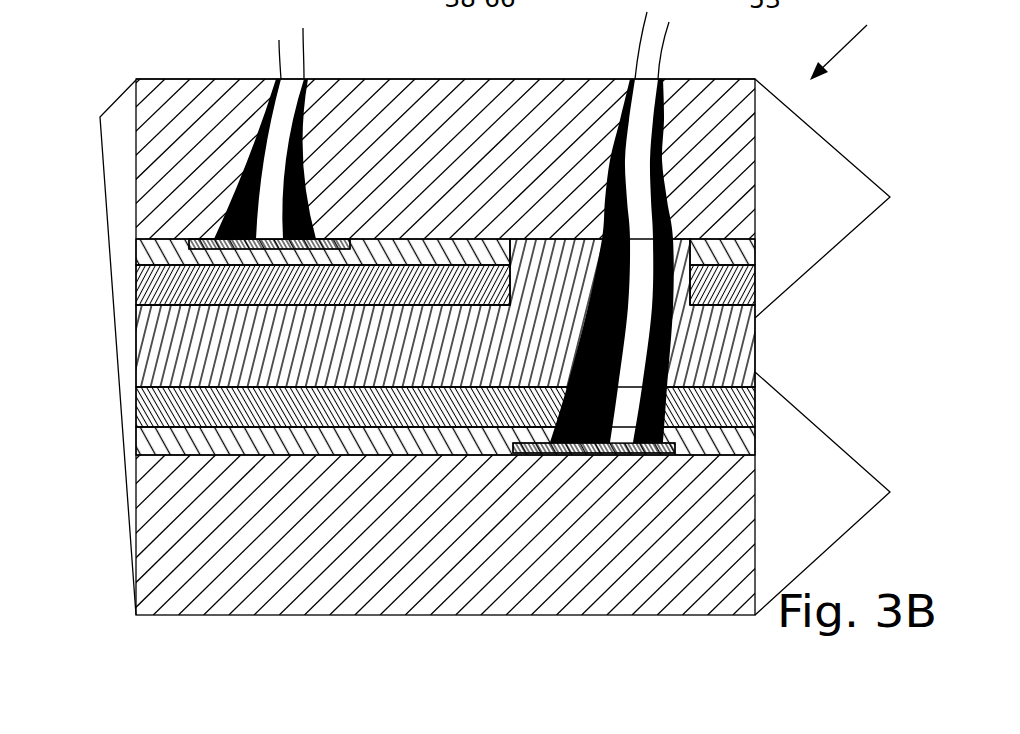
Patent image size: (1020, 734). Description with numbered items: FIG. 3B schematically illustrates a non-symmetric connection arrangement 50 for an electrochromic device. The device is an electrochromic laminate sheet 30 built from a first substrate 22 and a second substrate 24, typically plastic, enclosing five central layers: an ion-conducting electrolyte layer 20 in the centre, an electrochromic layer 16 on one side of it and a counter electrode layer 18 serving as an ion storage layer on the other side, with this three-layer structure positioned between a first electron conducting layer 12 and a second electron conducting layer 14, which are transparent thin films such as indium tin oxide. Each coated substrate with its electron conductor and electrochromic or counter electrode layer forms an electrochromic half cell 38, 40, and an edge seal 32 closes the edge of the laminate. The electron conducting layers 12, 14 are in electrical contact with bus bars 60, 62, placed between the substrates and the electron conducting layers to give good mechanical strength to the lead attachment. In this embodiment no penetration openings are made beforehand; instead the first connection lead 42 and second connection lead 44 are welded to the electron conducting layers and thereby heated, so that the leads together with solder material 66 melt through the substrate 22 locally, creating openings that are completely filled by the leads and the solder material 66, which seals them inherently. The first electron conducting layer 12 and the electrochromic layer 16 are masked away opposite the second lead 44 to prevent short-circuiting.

The first electron conducting layer 12 is at (750, 257).
The second electron conducting layer 14 is at (163, 455).
The electrochromic layer 16 is at (140, 306).
The counter electrode layer 18 is at (163, 408).
The electrolyte layer 20 is at (742, 347).
The first substrate 22 is at (147, 88).
The second substrate 24 is at (737, 510).
The electrochromic laminate sheet 30 is at (100, 347).
The edge seal 32 is at (755, 197).
The electrochromic half cell 38 is at (841, 198).
The electrochromic half cell 40 is at (843, 493).
The first connection lead 42 is at (302, 60).
The second connection lead 44 is at (657, 45).
The connection arrangement 50 is at (859, 40).
The bus bar 60 is at (205, 238).
The bus bar 62 is at (678, 451).
The solder material 66 is at (275, 96).